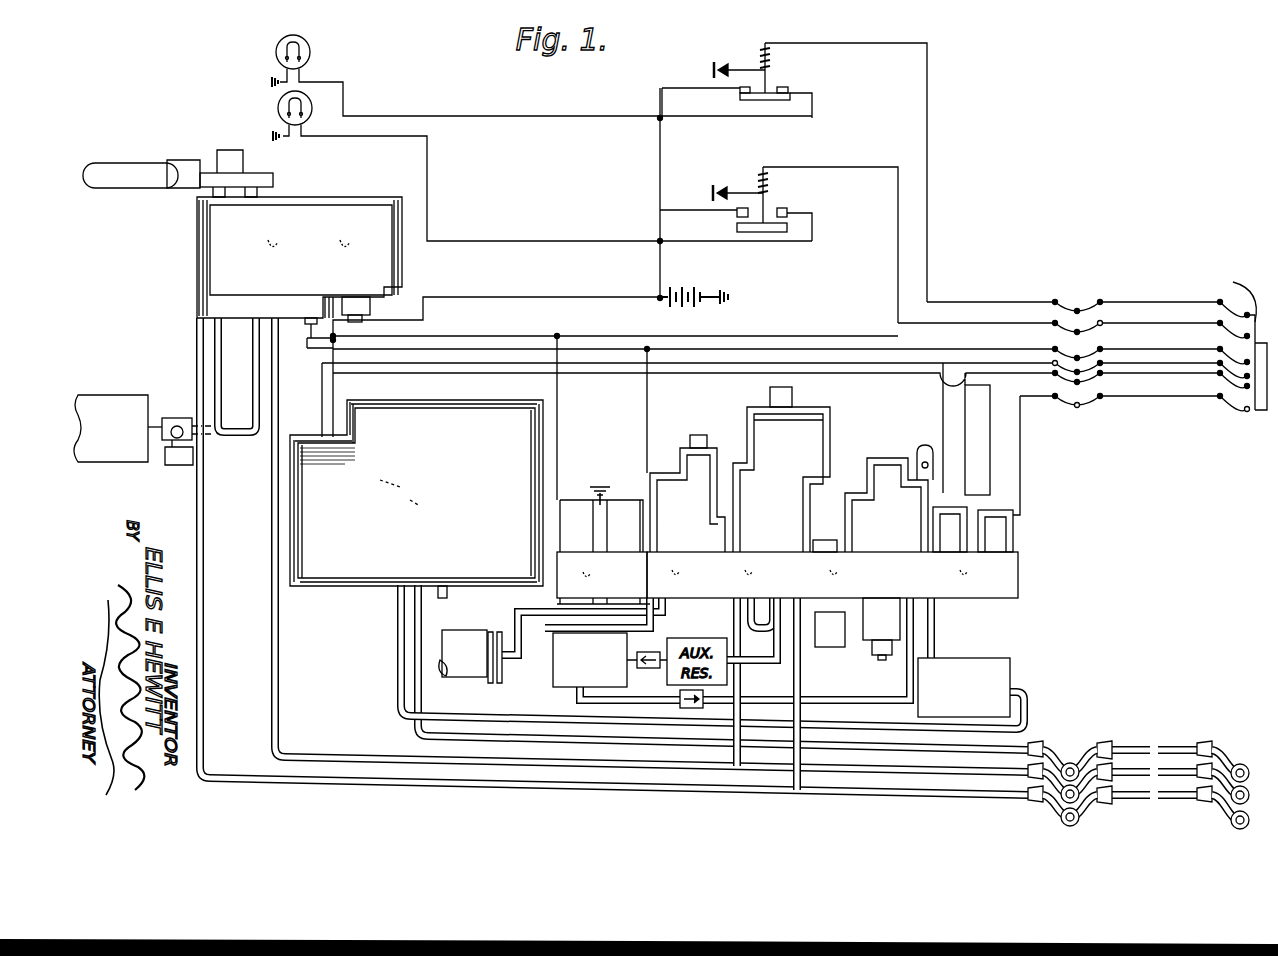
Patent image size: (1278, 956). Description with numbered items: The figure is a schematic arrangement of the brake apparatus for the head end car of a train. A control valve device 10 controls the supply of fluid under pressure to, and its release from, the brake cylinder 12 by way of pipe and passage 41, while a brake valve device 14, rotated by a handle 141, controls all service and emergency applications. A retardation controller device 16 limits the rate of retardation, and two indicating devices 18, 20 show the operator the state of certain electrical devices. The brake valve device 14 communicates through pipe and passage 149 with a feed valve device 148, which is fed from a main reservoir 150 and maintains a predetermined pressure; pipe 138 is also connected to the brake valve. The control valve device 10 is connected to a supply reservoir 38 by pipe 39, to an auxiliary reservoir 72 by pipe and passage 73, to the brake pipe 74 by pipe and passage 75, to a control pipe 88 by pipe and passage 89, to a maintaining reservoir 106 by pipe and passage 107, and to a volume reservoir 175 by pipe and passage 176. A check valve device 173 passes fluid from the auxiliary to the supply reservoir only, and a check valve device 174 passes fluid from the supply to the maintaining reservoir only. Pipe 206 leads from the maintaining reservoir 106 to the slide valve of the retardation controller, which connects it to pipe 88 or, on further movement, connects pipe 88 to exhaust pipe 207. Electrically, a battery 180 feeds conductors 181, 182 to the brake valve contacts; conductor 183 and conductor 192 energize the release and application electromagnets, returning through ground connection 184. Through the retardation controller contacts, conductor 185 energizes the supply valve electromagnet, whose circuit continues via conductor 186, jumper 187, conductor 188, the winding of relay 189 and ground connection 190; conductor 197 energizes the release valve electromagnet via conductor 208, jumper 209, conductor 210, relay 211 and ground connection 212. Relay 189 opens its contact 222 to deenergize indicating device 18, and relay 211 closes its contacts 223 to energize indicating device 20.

The control valve device 10 is at (1017, 578).
The brake cylinder 12 is at (481, 624).
The brake valve device 14 is at (190, 241).
The retardation controller device 16 is at (322, 590).
The indicating device 18 is at (310, 48).
The indicating device 20 is at (277, 109).
The supply reservoir 38 is at (553, 668).
The pipe 39 is at (654, 624).
The pipe and passage 41 is at (525, 608).
The auxiliary reservoir 72 is at (738, 642).
The pipe and passage 73 is at (757, 682).
The brake pipe 74 is at (203, 548).
The pipe and passage 75 is at (802, 682).
The control pipe 88 is at (412, 648).
The pipe and passage 89 is at (914, 633).
The maintaining reservoir 106 is at (997, 678).
The pipe and passage 107 is at (936, 612).
The pipe 138 is at (270, 492).
The handle 141 is at (160, 170).
The feed valve device 148 is at (177, 418).
The pipe and passage 149 is at (253, 352).
The main reservoir 150 is at (130, 395).
The check valve device 173 is at (647, 652).
The check valve device 174 is at (680, 690).
The volume reservoir 175 is at (818, 647).
The pipe and passage 176 is at (780, 598).
The battery 180 is at (682, 291).
The conductor 181 is at (497, 295).
The conductor 182 is at (338, 344).
The conductor 183 is at (430, 357).
The ground connection 184 is at (601, 484).
The conductor 185 is at (321, 376).
The conductor 186 is at (963, 428).
The jumper 187 is at (1222, 296).
The conductor 188 is at (930, 207).
The relay 189 is at (770, 76).
The ground connection 190 is at (712, 68).
The conductor 192 is at (429, 334).
The conductor 197 is at (330, 388).
The pipe 206 is at (396, 612).
The exhaust pipe 207 is at (449, 596).
The conductor 208 is at (1022, 464).
The jumper 209 is at (1262, 402).
The conductor 210 is at (1137, 354).
The relay 211 is at (770, 197).
The ground connection 212 is at (718, 190).
The contact 222 is at (786, 90).
The contacts 223 is at (786, 211).